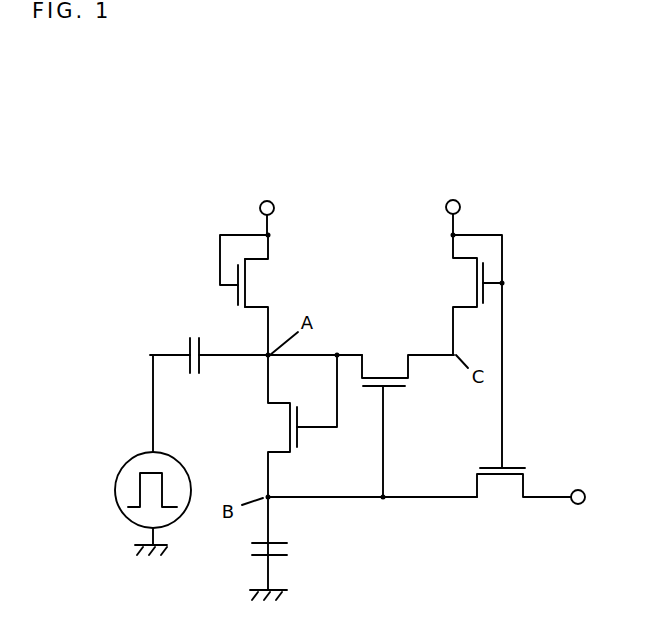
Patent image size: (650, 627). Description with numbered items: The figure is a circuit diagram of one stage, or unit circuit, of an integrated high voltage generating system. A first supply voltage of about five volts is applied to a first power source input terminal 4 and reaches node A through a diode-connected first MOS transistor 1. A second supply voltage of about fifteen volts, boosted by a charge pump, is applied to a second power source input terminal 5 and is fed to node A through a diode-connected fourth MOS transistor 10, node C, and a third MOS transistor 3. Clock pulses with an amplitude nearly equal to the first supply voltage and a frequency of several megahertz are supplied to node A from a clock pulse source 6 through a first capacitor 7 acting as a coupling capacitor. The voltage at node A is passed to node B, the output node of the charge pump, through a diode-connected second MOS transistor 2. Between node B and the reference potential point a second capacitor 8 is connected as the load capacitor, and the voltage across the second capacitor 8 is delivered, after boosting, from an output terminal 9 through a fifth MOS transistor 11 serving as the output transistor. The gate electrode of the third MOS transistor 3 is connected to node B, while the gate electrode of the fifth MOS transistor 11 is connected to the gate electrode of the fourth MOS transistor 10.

The first MOS transistor 1 is at (257, 285).
The second MOS transistor 2 is at (272, 425).
The third MOS transistor 3 is at (387, 368).
The first power source input terminal 4 is at (259, 202).
The second power source input terminal 5 is at (460, 203).
The clock pulse source 6 is at (118, 472).
The first capacitor 7 is at (191, 334).
The second capacitor 8 is at (288, 552).
The output terminal 9 is at (587, 488).
The fourth MOS transistor 10 is at (460, 287).
The fifth MOS transistor 11 is at (502, 490).